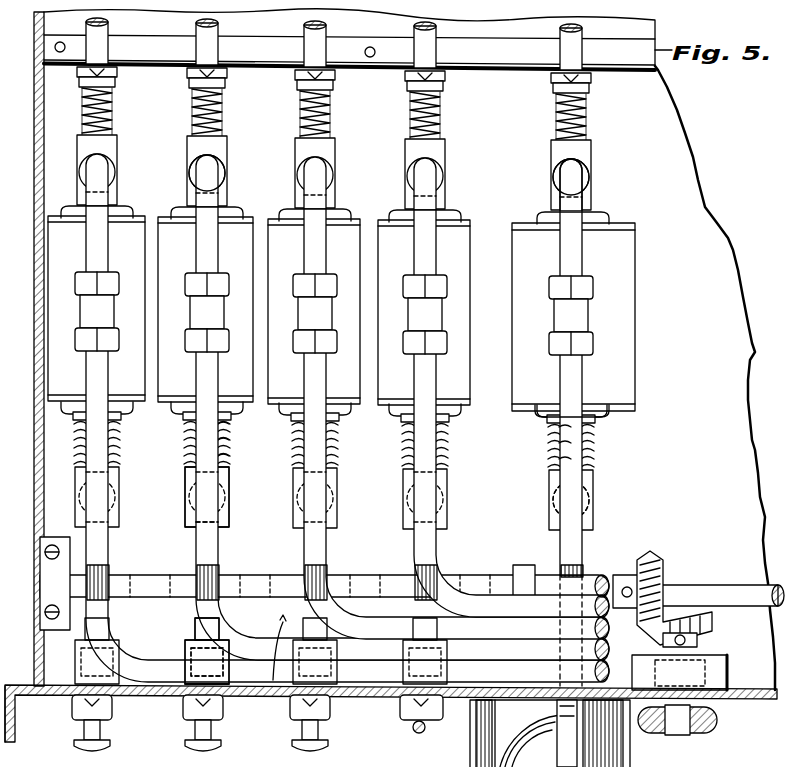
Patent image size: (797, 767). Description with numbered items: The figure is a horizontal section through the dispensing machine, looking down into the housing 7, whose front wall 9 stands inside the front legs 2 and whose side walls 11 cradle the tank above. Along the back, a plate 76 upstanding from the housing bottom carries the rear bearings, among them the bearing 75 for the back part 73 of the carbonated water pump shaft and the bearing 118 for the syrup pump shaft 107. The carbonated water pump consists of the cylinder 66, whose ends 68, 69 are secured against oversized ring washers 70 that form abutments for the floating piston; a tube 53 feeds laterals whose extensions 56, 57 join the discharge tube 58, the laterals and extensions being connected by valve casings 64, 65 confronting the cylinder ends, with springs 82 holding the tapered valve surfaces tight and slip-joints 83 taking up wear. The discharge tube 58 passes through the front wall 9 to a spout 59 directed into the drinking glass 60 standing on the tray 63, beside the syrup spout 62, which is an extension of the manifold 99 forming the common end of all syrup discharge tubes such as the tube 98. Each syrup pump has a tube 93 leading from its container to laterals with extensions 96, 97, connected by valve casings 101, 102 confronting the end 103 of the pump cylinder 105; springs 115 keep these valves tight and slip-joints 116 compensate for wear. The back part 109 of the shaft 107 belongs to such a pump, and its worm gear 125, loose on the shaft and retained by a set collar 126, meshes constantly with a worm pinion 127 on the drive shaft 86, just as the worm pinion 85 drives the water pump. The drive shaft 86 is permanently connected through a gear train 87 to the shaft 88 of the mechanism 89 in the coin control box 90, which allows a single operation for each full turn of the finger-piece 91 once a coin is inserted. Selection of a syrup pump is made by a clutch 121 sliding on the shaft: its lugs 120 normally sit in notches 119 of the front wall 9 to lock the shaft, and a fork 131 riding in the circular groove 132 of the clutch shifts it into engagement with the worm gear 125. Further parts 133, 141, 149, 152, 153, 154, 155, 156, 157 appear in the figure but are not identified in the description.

The front legs 2 is at (12, 726).
The housing 7 is at (270, 688).
The front wall 9 is at (268, 690).
The tube 53 is at (574, 44).
The extension 56 is at (585, 177).
The extension 57 is at (592, 494).
The discharge tube 58 is at (576, 250).
The spout 59 is at (568, 730).
The spout 62 is at (520, 722).
The tray 63 is at (468, 754).
The valve casing 64 is at (588, 157).
The valve casing 65 is at (595, 478).
The cylinder 66 is at (617, 325).
The cylinder end 68 is at (633, 223).
The cylinder end 69 is at (633, 411).
The ring washers 70 is at (633, 231).
The back part of shaft 73 is at (590, 144).
The bearing 75 is at (594, 86).
The plate 76 is at (208, 40).
The springs 82 is at (587, 128).
The slip-joints 83 is at (590, 312).
The worm pinion 85 is at (582, 565).
The drive shaft 86 is at (715, 592).
The gear train 87 is at (668, 596).
The shaft 88 is at (697, 640).
The mechanism 89 is at (705, 664).
The coin control box 90 is at (722, 668).
The finger-piece 91 is at (720, 722).
The tube 93 is at (192, 73).
The extension 96 is at (200, 172).
The extension 97 is at (205, 496).
The discharge tube 98 is at (188, 414).
The manifold 99 is at (522, 566).
The valve casing 101 is at (192, 156).
The valve casing 102 is at (183, 472).
The cylinder end 103 is at (187, 216).
The pump cylinder 105 is at (227, 245).
The shaft 107 is at (212, 642).
The back part of shaft 109 is at (190, 139).
The springs 115 is at (192, 110).
The slip-joints 116 is at (148, 402).
The bearing 118 is at (192, 93).
The notches 119 is at (207, 656).
The lugs 120 is at (196, 662).
The clutch 121 is at (178, 610).
The worm gear 125 is at (196, 612).
The set collar 126 is at (185, 527).
The worm pinion 127 is at (193, 565).
The fork 131 is at (183, 628).
The circular groove 132 is at (186, 641).
The side walls 11 is at (16, 761).
The lever 155 is at (68, 761).
The lever 157 is at (409, 761).
The lever 133 is at (153, 761).
The lever 141 is at (196, 761).
The lever 153 is at (240, 761).
The lever 154 is at (286, 761).
The lever 149 is at (330, 761).
The lever 152 is at (370, 761).
The drinking glass 60 is at (663, 761).
The lever 156 is at (750, 761).